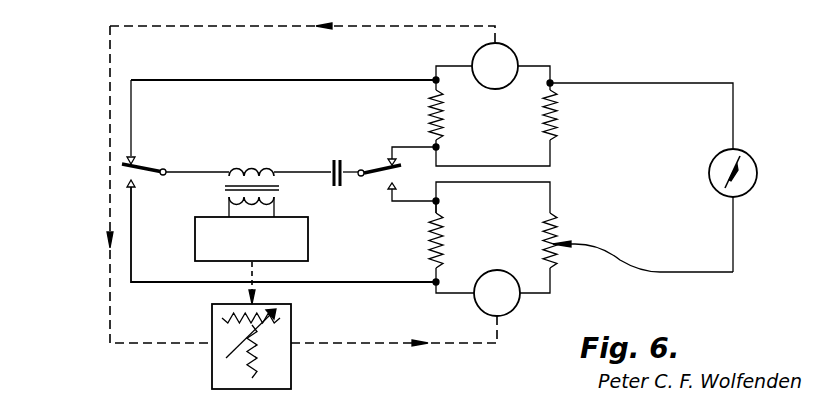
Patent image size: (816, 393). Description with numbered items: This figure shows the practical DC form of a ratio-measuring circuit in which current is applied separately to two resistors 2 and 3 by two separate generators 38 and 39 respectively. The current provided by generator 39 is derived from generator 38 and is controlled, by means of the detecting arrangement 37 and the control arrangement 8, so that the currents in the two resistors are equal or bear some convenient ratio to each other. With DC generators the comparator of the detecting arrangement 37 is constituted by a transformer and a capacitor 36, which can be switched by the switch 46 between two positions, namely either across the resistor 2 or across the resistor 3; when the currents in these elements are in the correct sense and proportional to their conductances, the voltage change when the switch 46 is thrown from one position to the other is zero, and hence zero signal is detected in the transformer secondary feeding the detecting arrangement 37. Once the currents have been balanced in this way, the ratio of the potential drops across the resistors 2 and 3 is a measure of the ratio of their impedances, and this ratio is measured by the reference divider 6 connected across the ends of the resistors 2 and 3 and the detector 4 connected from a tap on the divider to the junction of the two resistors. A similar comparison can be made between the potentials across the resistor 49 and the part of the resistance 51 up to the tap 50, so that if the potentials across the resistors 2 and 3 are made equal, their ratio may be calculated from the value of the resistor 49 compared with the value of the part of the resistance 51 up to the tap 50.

The resistor 2 is at (430, 115).
The resistor 3 is at (442, 239).
The detector 4 is at (748, 157).
The reference divider 6 is at (571, 188).
The control arrangement 8 is at (292, 368).
The capacitor 36 is at (334, 160).
The detecting arrangement 37 is at (288, 218).
The generator 38 is at (514, 52).
The generator 39 is at (506, 318).
The switch 46 is at (377, 160).
The resistor 49 is at (556, 121).
The tap 50 is at (563, 238).
The resistance 51 is at (543, 232).